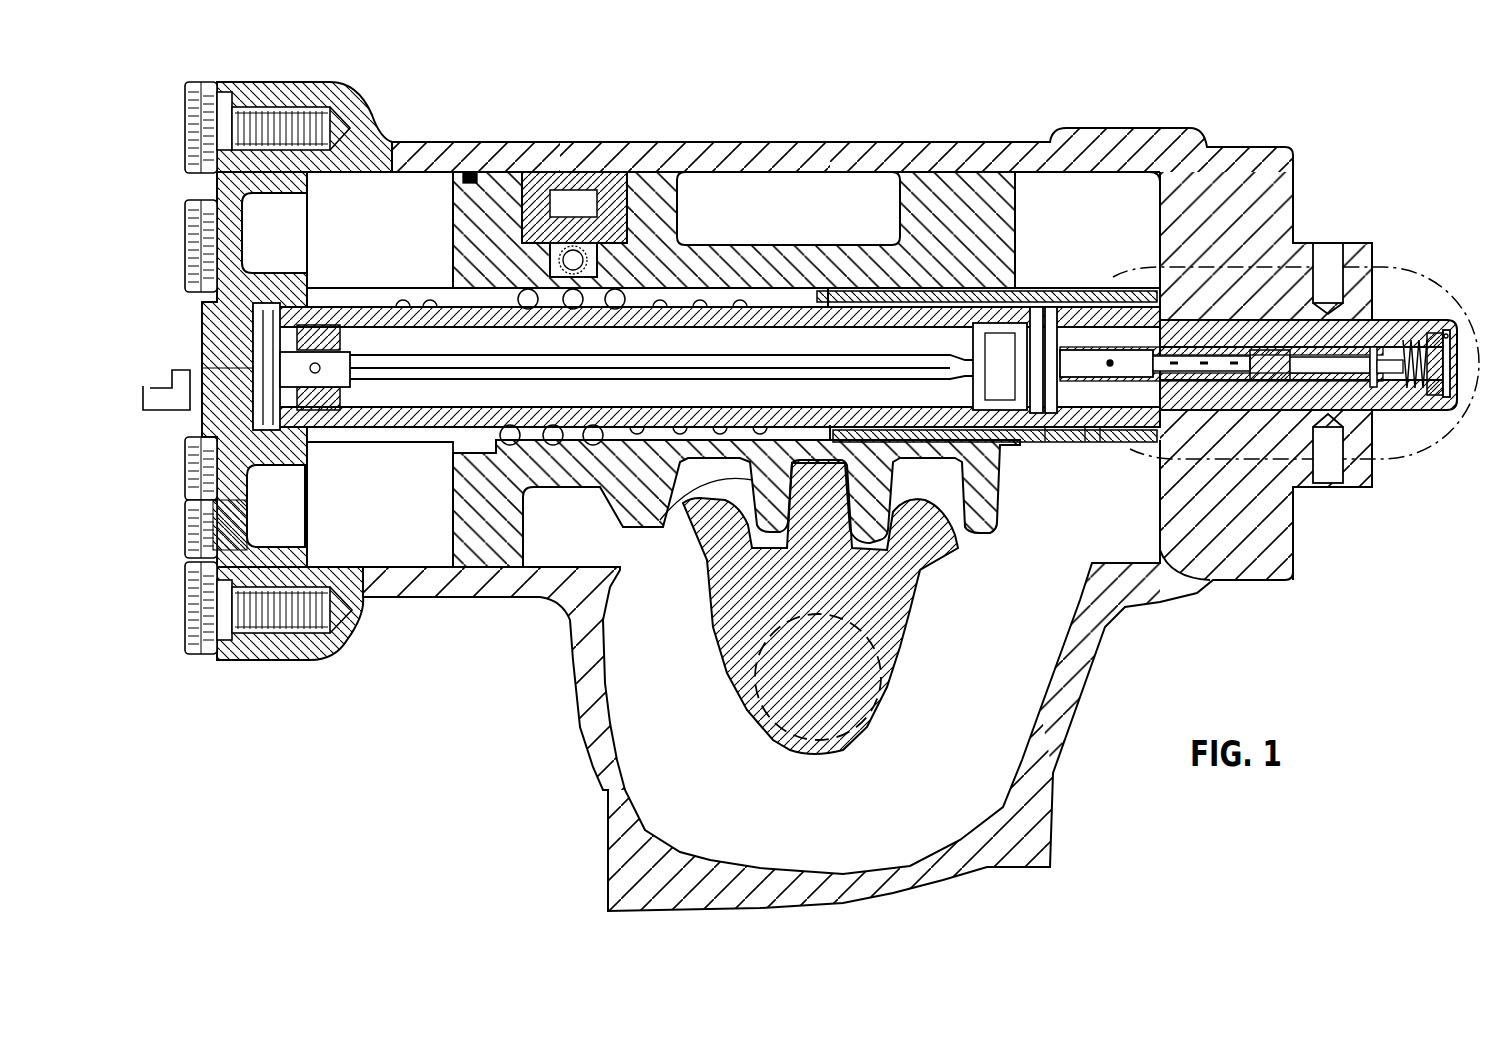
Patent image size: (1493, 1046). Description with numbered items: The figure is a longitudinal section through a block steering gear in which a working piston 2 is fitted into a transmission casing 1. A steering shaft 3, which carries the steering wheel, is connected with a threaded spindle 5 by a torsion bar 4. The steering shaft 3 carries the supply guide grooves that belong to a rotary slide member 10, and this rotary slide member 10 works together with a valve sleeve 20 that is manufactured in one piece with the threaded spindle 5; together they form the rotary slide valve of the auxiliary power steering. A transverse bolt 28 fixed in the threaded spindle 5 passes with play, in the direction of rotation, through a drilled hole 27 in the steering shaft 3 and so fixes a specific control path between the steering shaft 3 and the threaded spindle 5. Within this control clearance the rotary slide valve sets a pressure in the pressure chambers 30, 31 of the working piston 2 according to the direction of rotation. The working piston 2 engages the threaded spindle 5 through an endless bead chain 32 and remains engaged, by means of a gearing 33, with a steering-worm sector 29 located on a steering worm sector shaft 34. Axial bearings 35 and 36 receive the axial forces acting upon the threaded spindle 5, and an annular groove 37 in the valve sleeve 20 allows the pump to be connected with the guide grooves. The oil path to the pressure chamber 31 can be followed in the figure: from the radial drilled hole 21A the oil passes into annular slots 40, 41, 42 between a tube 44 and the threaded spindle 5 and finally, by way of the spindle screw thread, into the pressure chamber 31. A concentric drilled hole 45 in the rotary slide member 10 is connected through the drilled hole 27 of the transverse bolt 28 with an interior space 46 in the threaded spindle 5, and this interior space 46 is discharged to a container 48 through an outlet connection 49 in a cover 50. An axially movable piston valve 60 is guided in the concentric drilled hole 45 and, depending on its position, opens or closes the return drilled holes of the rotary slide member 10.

The transmission casing 1 is at (623, 170).
The working piston 2 is at (975, 195).
The steering shaft 3 is at (1455, 318).
The torsion bar 4 is at (593, 367).
The threaded spindle 5 is at (883, 320).
The rotary slide member 10 is at (1240, 267).
The valve sleeve 20 is at (1183, 300).
The radial drilled hole 21A is at (1138, 445).
The drilled hole 27 is at (1057, 442).
The transverse bolt 28 is at (1040, 307).
The steering-worm sector 29 is at (723, 603).
The pressure chamber 30 is at (1112, 192).
The pressure chamber 31 is at (388, 228).
The endless bead chain 32 is at (570, 212).
The gearing 33 is at (690, 520).
The steering worm sector shaft 34 is at (853, 727).
The axial bearing 35 is at (1303, 262).
The axial bearing 36 is at (307, 442).
The annular groove 37 is at (1295, 555).
The annular slot 40 is at (1092, 442).
The annular slot 41 is at (977, 467).
The annular slot 42 is at (873, 432).
The tube 44 is at (997, 535).
The concentric drilled hole 45 is at (1100, 442).
The interior space 46 is at (448, 392).
The container 48 is at (140, 397).
The outlet connection 49 is at (190, 272).
The cover 50 is at (240, 335).
The piston valve 60 is at (1303, 442).